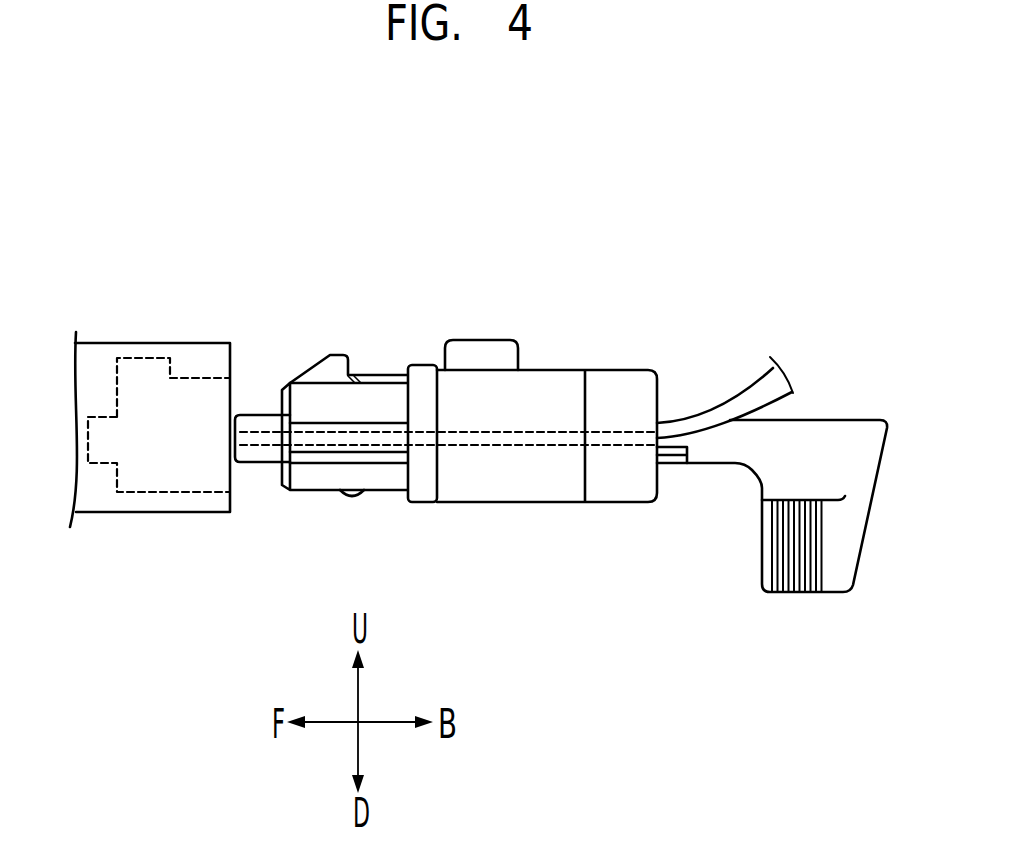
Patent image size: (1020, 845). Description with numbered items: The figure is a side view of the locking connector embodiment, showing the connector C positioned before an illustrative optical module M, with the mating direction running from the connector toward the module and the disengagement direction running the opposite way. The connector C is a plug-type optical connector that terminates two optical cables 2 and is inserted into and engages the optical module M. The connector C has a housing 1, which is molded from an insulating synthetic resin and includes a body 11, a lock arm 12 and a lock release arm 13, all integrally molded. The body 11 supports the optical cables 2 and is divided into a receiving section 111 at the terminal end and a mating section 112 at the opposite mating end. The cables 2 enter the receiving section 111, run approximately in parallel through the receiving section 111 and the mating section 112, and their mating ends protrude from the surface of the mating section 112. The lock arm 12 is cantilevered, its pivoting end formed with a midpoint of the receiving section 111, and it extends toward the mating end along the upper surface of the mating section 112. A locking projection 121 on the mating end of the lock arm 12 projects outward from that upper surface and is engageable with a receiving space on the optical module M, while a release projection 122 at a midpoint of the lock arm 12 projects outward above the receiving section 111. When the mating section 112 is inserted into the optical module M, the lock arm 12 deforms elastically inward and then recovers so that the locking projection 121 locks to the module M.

The optical module M is at (148, 343).
The connector C is at (571, 406).
The housing 1 is at (571, 435).
The body 11 is at (469, 505).
The receiving section 111 is at (532, 476).
The mating section 112 is at (372, 498).
The lock arm 12 is at (413, 304).
The locking projection 121 is at (336, 354).
The release projection 122 is at (472, 340).
The optical cables 2 is at (748, 392).
The lock release arm 13 is at (838, 418).